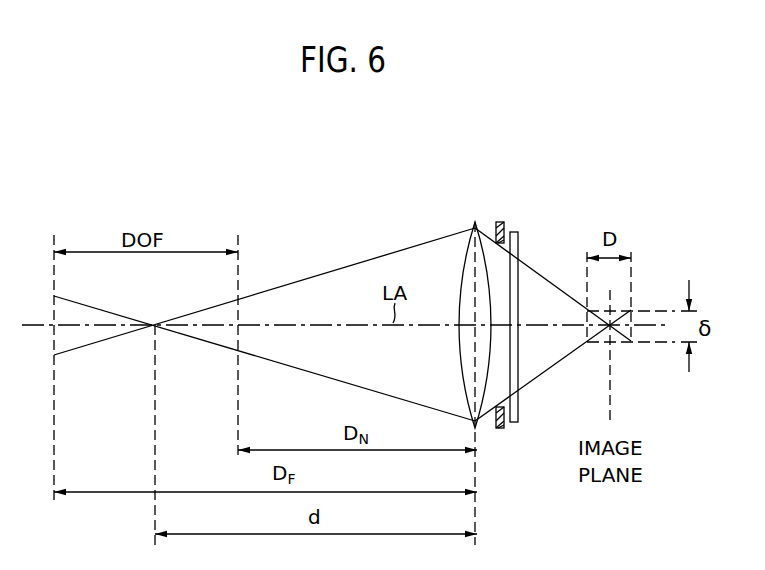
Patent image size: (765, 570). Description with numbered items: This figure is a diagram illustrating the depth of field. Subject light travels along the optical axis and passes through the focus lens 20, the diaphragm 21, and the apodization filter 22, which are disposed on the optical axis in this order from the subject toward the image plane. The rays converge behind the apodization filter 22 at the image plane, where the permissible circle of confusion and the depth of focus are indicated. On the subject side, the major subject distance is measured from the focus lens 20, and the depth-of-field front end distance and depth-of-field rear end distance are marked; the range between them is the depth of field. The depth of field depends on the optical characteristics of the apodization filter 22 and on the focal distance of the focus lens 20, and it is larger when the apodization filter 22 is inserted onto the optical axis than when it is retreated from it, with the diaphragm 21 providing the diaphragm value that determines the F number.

The focus lens 20 is at (472, 225).
The diaphragm 21 is at (501, 222).
The apodization (APD) filter 22 is at (514, 423).